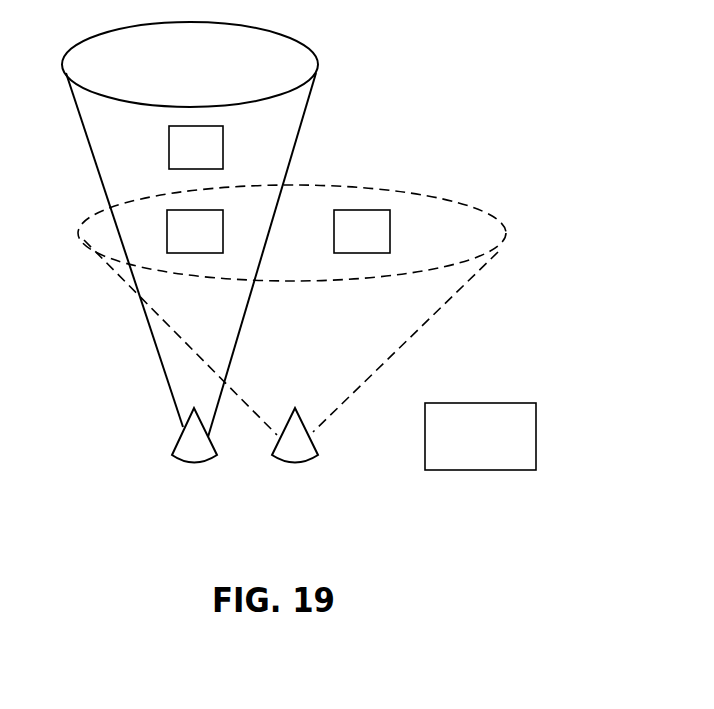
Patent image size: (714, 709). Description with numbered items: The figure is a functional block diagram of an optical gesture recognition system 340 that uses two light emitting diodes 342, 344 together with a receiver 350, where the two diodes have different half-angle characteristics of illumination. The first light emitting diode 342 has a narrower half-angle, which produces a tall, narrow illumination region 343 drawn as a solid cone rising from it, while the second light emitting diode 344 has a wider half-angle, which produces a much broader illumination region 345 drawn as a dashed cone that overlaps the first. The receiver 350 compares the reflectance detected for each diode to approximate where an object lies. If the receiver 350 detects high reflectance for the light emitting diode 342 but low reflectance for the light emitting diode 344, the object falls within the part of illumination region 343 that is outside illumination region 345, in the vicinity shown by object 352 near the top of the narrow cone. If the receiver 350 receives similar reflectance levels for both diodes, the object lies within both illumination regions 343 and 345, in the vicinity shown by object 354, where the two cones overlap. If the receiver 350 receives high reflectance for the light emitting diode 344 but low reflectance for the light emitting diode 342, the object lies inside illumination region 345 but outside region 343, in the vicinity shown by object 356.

The optical gesture recognition system 340 is at (531, 58).
The light emitting diode 342 is at (188, 467).
The illumination region 343 is at (312, 101).
The light emitting diode 344 is at (297, 467).
The illumination region 345 is at (422, 327).
The receiver 350 is at (502, 449).
The object 352 is at (215, 159).
The object 354 is at (214, 243).
The object 356 is at (381, 243).